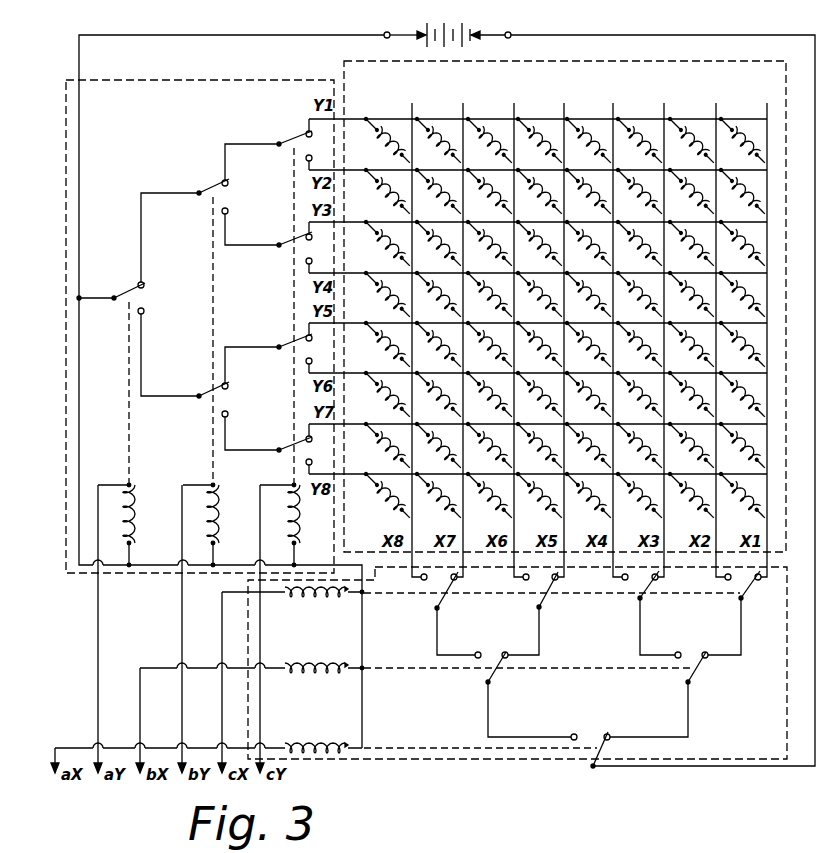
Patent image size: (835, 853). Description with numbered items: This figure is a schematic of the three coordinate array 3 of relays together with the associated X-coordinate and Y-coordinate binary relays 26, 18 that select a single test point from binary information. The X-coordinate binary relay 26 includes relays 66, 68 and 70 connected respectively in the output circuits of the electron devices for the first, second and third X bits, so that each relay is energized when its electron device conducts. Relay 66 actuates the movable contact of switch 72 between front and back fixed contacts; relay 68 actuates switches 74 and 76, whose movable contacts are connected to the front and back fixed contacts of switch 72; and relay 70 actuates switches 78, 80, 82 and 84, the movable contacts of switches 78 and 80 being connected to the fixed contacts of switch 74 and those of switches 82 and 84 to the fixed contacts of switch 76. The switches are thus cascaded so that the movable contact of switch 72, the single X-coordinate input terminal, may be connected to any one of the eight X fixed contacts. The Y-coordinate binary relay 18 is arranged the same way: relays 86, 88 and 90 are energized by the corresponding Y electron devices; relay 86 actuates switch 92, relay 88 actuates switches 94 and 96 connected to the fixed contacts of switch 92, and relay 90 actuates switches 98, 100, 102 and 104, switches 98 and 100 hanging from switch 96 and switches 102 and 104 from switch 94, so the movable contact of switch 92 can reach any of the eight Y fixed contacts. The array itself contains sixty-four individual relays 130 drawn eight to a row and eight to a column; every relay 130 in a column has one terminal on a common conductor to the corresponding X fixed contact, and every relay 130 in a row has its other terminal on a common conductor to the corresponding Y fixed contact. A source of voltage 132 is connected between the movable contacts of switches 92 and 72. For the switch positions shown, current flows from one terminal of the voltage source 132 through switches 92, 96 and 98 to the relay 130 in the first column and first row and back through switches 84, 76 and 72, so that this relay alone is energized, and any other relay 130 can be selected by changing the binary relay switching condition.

The coordinate array 3 is at (562, 61).
The Y-coordinate binary relay 18 is at (100, 580).
The binary relay matrix X coordinate 26 is at (357, 764).
The relay 66 is at (314, 742).
The relay 68 is at (322, 662).
The relay 70 is at (308, 598).
The switch 72 is at (612, 750).
The switch 74 is at (497, 674).
The switch 76 is at (700, 672).
The switch 78 is at (447, 595).
The switch 80 is at (549, 595).
The switch 82 is at (648, 588).
The switch 84 is at (749, 598).
The relay 86 is at (136, 516).
The relay 88 is at (220, 516).
The relay 90 is at (290, 518).
The switch 92 is at (127, 293).
The switch 94 is at (212, 389).
The switch 96 is at (212, 186).
The switch 98 is at (292, 139).
The switch 100 is at (292, 240).
The switch 102 is at (292, 342).
The switch 104 is at (292, 445).
The relay 130 is at (735, 178).
The source of voltage 132 is at (422, 30).